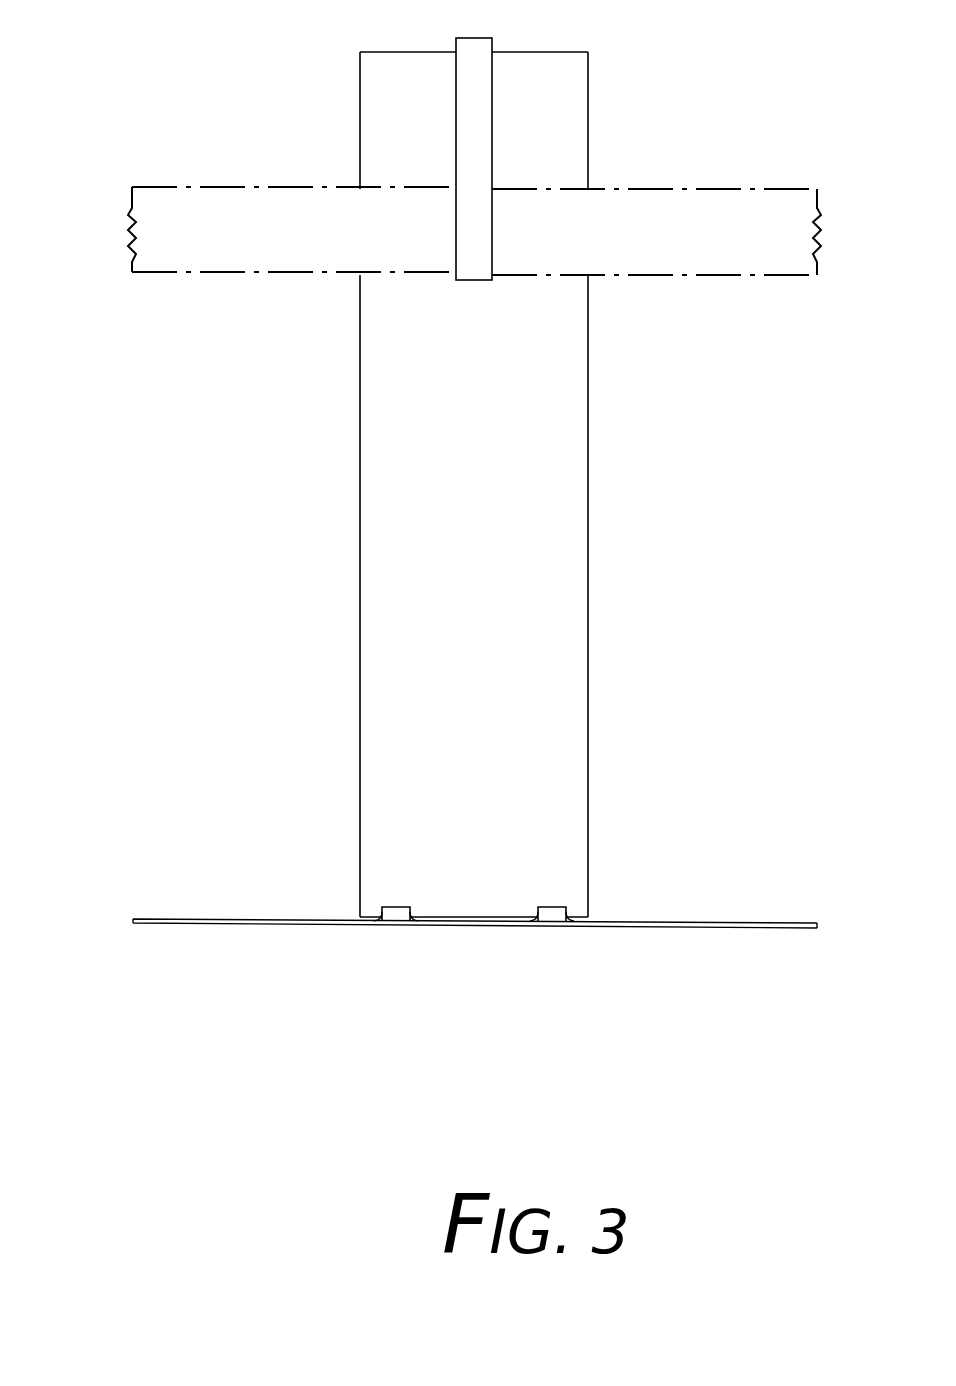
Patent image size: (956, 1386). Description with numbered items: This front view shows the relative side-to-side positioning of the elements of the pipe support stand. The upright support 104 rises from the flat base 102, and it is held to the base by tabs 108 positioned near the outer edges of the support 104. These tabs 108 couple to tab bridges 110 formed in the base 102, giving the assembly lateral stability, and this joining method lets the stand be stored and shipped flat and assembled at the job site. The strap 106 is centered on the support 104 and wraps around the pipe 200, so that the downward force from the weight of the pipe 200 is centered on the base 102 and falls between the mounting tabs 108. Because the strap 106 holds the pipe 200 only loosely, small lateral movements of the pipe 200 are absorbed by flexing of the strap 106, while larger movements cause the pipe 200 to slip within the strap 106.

The base 102 is at (713, 923).
The support 104 is at (362, 560).
The strap 106 is at (492, 40).
The tabs 108 is at (397, 922).
The tab bridges 110 is at (377, 920).
The pipe 200 is at (193, 187).